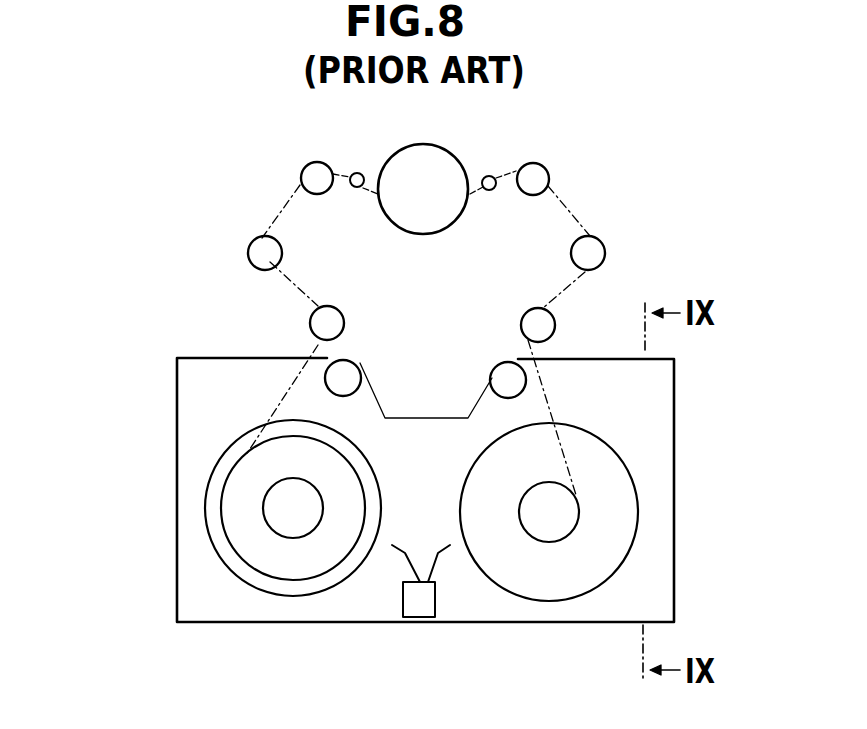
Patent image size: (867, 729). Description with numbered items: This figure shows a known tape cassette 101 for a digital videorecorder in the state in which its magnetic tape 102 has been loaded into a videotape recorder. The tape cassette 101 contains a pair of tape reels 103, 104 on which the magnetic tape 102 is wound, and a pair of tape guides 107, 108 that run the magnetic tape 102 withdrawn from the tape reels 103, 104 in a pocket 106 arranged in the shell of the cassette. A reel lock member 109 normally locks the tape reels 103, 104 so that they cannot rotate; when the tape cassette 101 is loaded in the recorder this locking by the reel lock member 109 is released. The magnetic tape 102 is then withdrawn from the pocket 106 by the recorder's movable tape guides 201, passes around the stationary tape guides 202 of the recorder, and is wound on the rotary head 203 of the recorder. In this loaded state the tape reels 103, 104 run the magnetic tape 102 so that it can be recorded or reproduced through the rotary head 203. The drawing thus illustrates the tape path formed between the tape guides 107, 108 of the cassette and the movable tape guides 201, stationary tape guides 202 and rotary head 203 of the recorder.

The tape cassette 101 is at (173, 392).
The magnetic tape 102 is at (305, 378).
The tape reel 103 is at (270, 504).
The tape reel 104 is at (570, 518).
The pocket 106 is at (418, 395).
The tape guide 107 is at (348, 373).
The tape guide 108 is at (508, 370).
The reel lock member 109 is at (422, 618).
The movable tape guides 201 is at (663, 247).
The stationary tape guides 202 is at (317, 323).
The rotary head 203 is at (395, 210).